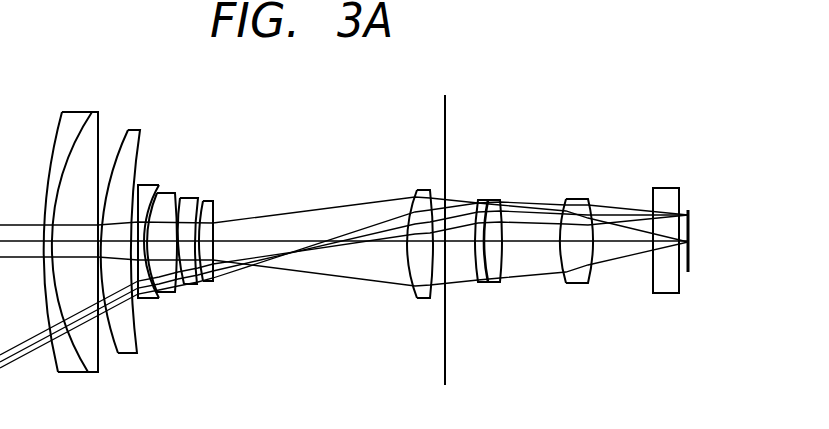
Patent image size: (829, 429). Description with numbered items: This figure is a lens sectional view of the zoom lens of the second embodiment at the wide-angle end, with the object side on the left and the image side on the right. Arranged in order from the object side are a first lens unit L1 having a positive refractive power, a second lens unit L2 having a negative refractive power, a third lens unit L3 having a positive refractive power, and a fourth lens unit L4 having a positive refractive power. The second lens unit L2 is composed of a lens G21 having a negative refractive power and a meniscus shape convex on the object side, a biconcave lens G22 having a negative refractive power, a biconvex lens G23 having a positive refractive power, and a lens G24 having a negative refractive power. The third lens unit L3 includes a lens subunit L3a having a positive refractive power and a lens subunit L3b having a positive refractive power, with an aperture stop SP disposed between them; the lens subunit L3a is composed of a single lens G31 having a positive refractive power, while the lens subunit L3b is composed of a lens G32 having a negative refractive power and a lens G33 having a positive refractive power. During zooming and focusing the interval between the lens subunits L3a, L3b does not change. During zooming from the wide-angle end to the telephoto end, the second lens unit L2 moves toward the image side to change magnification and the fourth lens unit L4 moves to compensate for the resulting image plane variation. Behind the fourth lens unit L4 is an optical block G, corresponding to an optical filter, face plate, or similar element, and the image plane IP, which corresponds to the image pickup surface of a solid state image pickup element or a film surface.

The first lens unit L1 is at (148, 100).
The second lens unit L2 is at (222, 177).
The third lens unit L3 is at (510, 150).
The lens subunit L3a is at (433, 188).
The lens subunit L3b is at (505, 188).
The fourth lens unit L4 is at (600, 194).
The lens G21 is at (148, 298).
The biconcave lens G22 is at (170, 193).
The biconvex lens G23 is at (197, 199).
The lens G24 is at (210, 201).
The single lens G31 is at (427, 298).
The lens G32 is at (482, 283).
The lens G33 is at (496, 283).
The aperture stop SP is at (445, 117).
The optical block G is at (672, 188).
The image plane IP is at (690, 226).